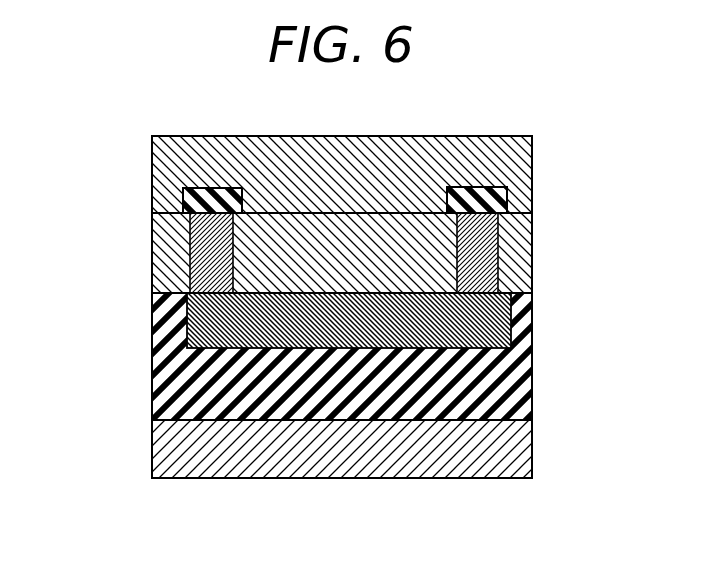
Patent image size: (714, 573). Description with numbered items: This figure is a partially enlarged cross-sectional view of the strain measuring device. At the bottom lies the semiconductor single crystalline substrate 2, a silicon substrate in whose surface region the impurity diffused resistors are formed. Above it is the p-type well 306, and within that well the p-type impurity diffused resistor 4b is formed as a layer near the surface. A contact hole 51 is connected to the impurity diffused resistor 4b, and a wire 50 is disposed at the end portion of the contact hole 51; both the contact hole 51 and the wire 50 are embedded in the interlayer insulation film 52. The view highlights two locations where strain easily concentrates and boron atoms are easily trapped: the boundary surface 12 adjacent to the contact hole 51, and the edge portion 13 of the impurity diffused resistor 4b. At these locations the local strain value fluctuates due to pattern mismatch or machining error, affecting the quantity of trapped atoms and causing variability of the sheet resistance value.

The semiconductor single crystalline substrate 2 is at (525, 450).
The p-type impurity diffused resistor 4b is at (372, 305).
The boundary surface 12 is at (189, 267).
The edge portion 13 is at (189, 292).
The wire 50 is at (207, 188).
The contact hole 51 is at (189, 249).
The interlayer insulation film 52 is at (520, 243).
The p-type well 306 is at (152, 392).